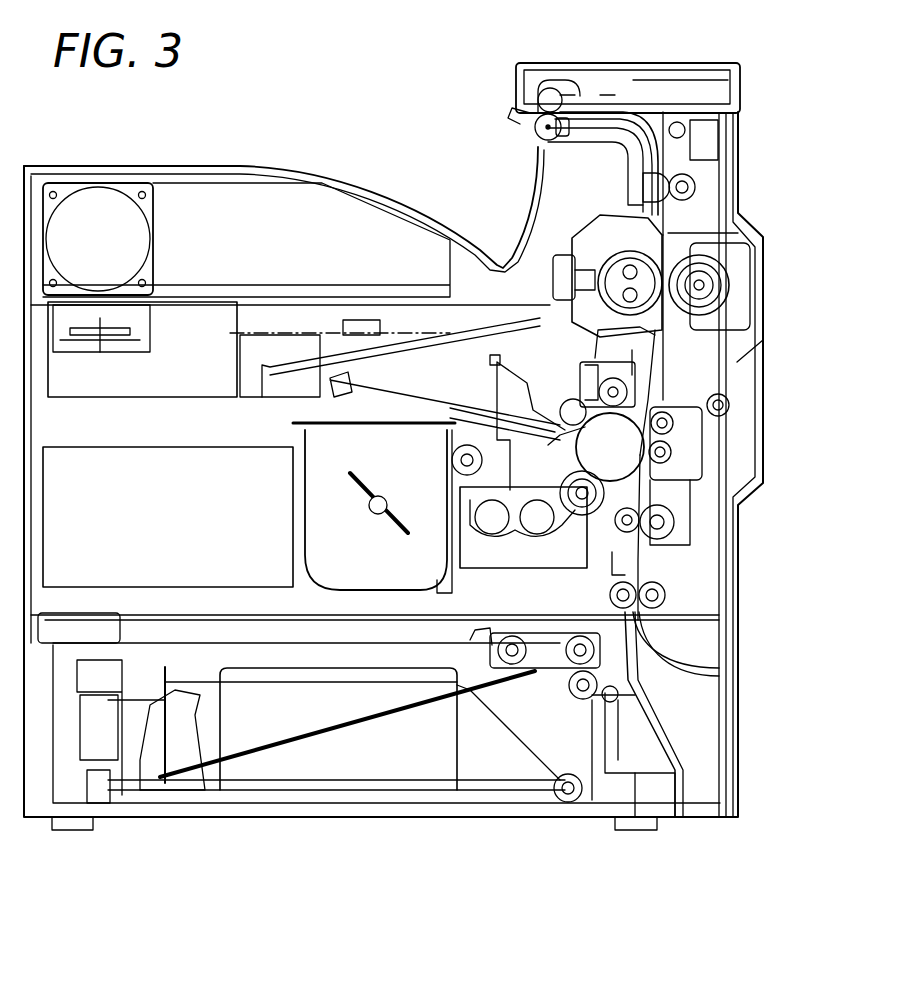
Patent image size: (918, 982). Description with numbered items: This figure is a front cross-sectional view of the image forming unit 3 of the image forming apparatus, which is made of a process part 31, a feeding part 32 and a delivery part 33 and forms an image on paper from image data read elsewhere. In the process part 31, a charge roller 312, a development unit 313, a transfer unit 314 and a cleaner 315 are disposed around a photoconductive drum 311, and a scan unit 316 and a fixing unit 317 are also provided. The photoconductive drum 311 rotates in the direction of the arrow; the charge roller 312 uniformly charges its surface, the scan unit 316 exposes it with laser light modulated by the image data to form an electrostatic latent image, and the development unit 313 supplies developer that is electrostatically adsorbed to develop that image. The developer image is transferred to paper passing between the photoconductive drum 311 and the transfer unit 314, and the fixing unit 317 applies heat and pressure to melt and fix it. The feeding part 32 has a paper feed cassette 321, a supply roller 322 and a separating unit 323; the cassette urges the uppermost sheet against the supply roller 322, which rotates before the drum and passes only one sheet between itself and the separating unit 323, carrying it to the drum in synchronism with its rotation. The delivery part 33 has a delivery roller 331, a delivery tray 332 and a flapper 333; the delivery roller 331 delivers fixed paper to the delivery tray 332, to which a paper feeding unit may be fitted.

The image forming unit 3 is at (740, 172).
The process part 31 is at (700, 530).
The feeding part 32 is at (700, 733).
The delivery part 33 is at (345, 130).
The photoconductive drum 311 is at (622, 470).
The charge roller 312 is at (562, 397).
The development unit 313 is at (511, 568).
The transfer unit 314 is at (672, 430).
The cleaner 315 is at (607, 360).
The scan unit 316 is at (180, 397).
The fixing unit 317 is at (577, 230).
The paper feed cassette 321 is at (405, 795).
The supply roller 322 is at (563, 635).
The separating unit 323 is at (640, 775).
The delivery roller 331 is at (533, 132).
The delivery tray 332 is at (400, 192).
The flapper 333 is at (648, 115).